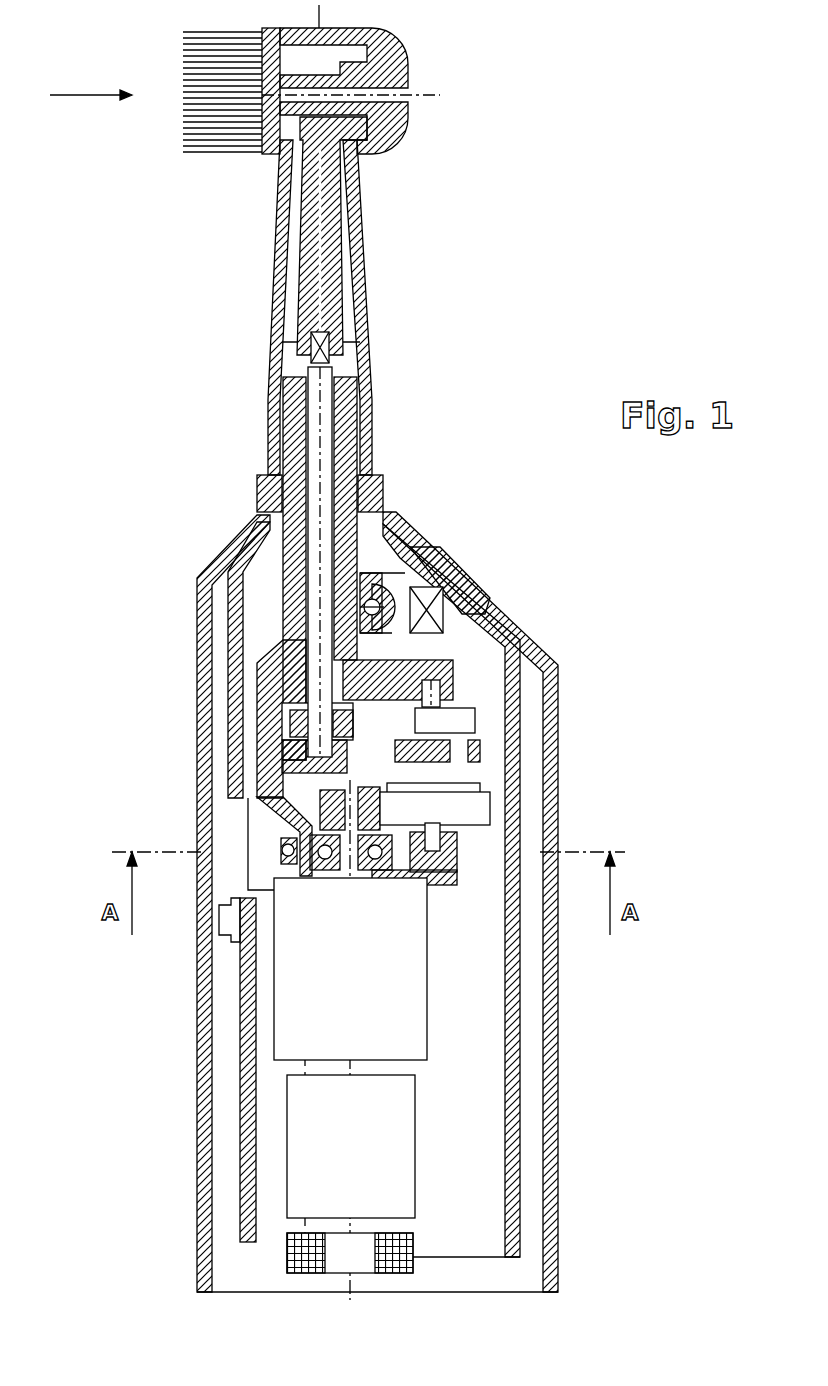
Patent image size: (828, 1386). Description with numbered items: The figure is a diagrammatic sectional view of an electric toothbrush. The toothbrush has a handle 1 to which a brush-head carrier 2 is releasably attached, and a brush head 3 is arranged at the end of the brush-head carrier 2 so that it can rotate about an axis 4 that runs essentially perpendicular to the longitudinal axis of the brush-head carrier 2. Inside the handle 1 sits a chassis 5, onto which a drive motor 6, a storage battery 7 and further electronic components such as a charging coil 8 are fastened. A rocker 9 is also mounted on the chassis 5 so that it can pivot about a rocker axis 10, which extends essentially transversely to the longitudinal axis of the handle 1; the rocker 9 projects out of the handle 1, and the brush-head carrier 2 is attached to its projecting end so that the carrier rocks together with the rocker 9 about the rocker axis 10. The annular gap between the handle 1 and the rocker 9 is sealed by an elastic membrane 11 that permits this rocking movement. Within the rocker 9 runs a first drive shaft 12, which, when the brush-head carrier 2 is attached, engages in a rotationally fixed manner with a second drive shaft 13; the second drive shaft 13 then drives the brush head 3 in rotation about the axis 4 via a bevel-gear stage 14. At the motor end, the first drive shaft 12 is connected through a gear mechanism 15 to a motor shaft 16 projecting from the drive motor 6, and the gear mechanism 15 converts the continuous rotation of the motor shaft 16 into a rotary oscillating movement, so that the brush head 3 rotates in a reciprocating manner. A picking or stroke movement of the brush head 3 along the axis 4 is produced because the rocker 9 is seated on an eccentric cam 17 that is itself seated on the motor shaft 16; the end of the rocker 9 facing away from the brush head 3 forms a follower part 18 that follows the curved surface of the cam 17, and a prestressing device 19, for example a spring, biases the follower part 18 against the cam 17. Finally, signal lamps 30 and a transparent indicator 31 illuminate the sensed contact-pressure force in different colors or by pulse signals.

The handle 1 is at (580, 808).
The brush-head carrier 2 is at (398, 313).
The brush head 3 is at (238, 182).
The axis 4 is at (432, 93).
The chassis 5 is at (512, 990).
The drive motor 6 is at (395, 1030).
The storage battery 7 is at (271, 1148).
The charging coil 8 is at (418, 1243).
The rocker 9 is at (370, 418).
The rocker axis 10 is at (378, 598).
The elastic membrane 11 is at (382, 487).
The first drive shaft 12 is at (320, 632).
The second drive shaft 13 is at (330, 243).
The bevel-gear stage 14 is at (395, 125).
The gear mechanism 15 is at (380, 716).
The motor shaft 16 is at (410, 808).
The cam 17 is at (326, 888).
The follower part 18 is at (262, 865).
The prestressing device 19 is at (270, 845).
The signal lamps 30 is at (427, 633).
The transparent indicator 31 is at (455, 578).